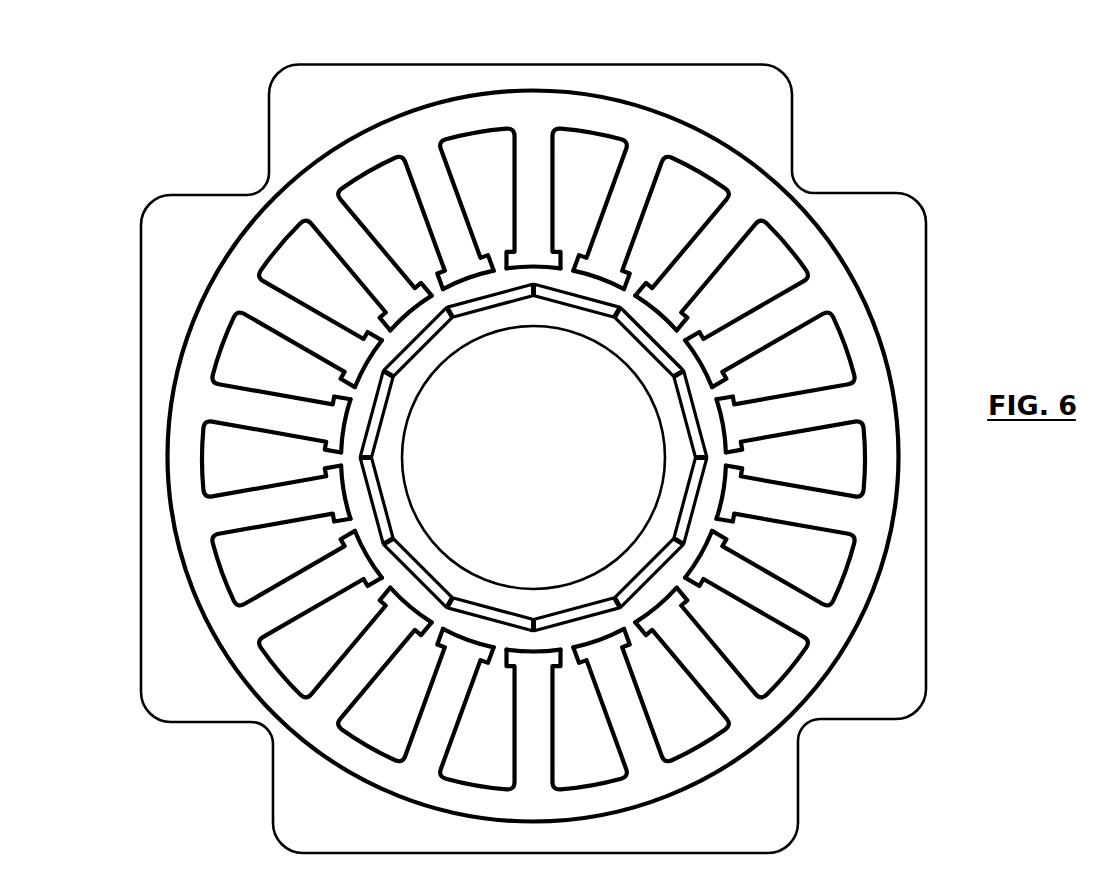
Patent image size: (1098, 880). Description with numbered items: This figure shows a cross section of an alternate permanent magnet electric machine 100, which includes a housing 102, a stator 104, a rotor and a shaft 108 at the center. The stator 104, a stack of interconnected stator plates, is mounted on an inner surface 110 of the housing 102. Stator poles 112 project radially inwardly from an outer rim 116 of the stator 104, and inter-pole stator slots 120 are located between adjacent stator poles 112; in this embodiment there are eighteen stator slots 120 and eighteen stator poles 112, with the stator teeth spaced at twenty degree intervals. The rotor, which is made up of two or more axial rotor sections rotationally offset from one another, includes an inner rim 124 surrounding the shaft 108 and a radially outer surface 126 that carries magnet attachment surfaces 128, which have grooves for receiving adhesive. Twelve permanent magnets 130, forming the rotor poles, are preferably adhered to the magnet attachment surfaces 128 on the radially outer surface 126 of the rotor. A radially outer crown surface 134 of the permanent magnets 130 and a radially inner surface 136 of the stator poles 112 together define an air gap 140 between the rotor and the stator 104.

The alternate electric machine 100 is at (845, 156).
The housing 102 is at (580, 62).
The stator 104 is at (727, 162).
The shaft 108 is at (538, 433).
The inner surface 110 is at (675, 120).
The stator poles 112 is at (342, 245).
The outer rim 116 is at (810, 250).
The inter-pole stator slots 120 is at (398, 214).
The inner rim 124 is at (403, 450).
The radially outer surface 126 is at (448, 310).
The magnet attachment surfaces 128 is at (487, 302).
The permanent magnets 130 is at (660, 345).
The radially outer crown surface 134 is at (647, 318).
The radially inner surface 136 is at (598, 268).
The air gap 140 is at (368, 368).